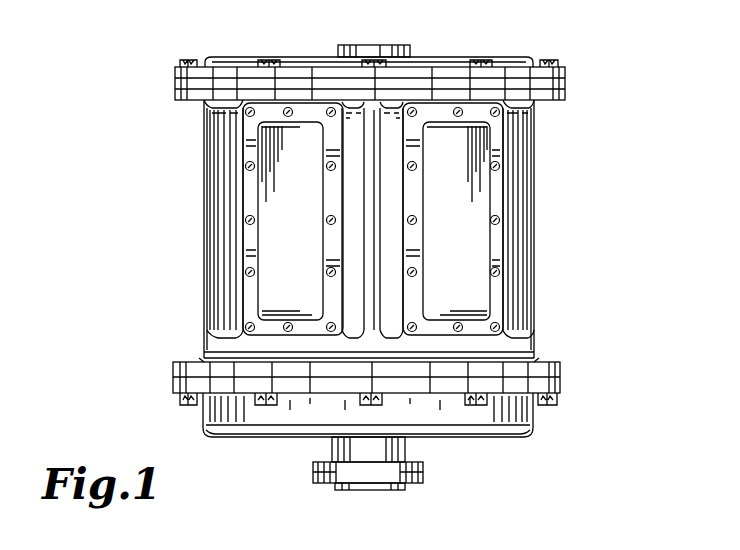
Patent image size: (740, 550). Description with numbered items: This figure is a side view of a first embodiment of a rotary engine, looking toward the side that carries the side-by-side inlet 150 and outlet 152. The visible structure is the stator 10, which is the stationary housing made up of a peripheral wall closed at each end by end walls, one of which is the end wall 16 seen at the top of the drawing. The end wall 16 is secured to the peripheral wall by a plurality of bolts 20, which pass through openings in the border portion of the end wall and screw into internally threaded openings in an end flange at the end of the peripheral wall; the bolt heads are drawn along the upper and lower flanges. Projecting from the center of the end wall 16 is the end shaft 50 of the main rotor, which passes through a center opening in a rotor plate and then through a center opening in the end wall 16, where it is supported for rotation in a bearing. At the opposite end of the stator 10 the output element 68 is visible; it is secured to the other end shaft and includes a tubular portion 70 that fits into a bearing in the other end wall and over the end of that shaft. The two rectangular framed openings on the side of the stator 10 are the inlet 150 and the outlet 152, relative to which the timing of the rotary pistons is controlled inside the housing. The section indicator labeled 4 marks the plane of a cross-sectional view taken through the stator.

The stator 10 is at (196, 294).
The end wall 16 is at (456, 61).
The bolts 20 is at (190, 62).
The end shaft 50 is at (400, 45).
The output element 68 is at (382, 474).
The tubular portion 70 is at (406, 447).
The inlet 150 is at (441, 201).
The outlet 152 is at (298, 172).
The section line 4- 4 is at (115, 220).